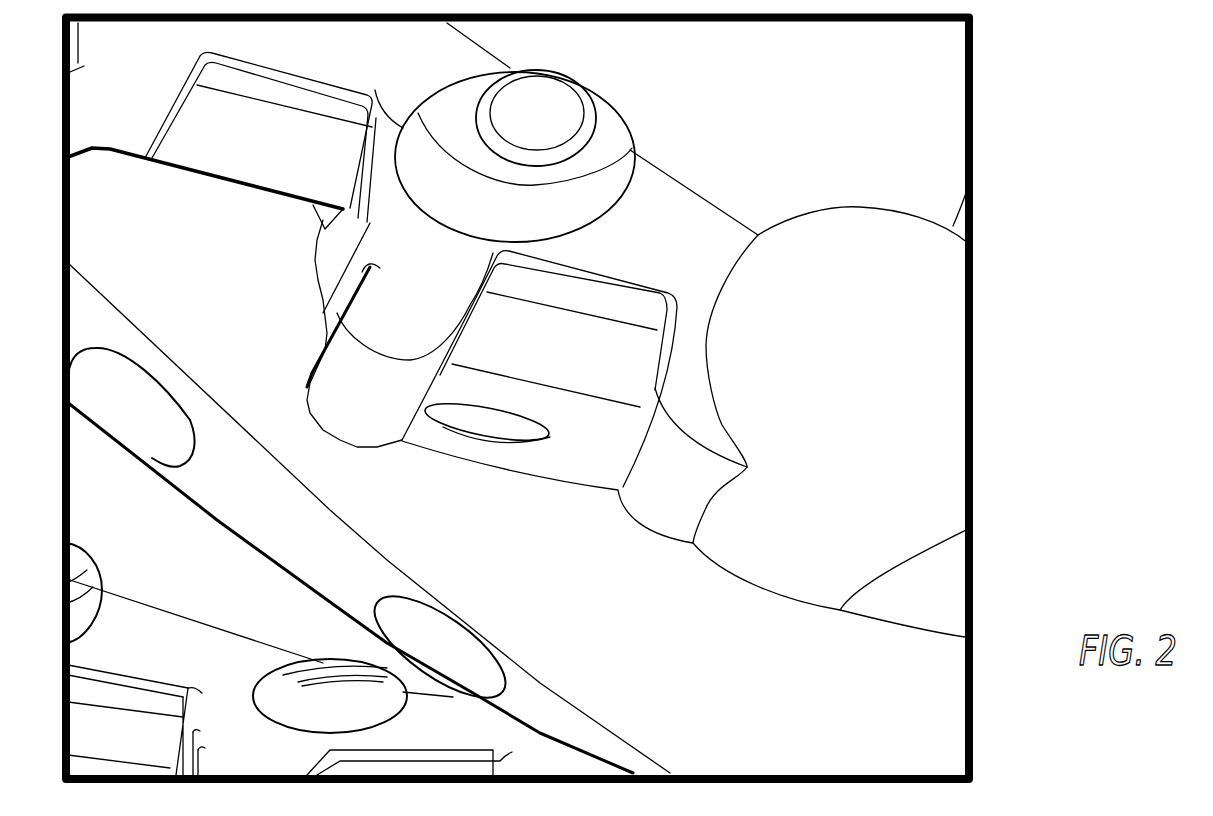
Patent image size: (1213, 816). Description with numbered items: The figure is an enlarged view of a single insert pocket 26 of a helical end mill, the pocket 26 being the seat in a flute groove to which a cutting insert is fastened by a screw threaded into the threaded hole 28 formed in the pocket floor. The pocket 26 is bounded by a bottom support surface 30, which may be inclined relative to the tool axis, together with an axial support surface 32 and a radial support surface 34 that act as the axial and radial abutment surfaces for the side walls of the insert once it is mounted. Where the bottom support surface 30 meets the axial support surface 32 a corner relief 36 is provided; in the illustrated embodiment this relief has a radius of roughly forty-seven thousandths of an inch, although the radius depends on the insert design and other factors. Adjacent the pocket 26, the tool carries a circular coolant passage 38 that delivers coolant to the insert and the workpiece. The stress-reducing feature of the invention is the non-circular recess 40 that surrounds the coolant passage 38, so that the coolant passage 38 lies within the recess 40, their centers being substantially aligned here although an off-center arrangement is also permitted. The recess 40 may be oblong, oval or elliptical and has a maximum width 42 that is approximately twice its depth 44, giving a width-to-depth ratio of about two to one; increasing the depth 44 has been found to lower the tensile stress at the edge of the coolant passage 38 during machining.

The pocket 26 is at (660, 387).
The threaded hole 28 is at (483, 415).
The bottom support surface 30 is at (580, 420).
The axial support surface 32 is at (363, 316).
The radial support surface 34 is at (498, 334).
The corner relief 36 is at (340, 412).
The coolant passage 38 is at (557, 115).
The non-circular recess 40 is at (577, 210).
The maximum width 42 is at (630, 152).
The depth 44 is at (480, 175).